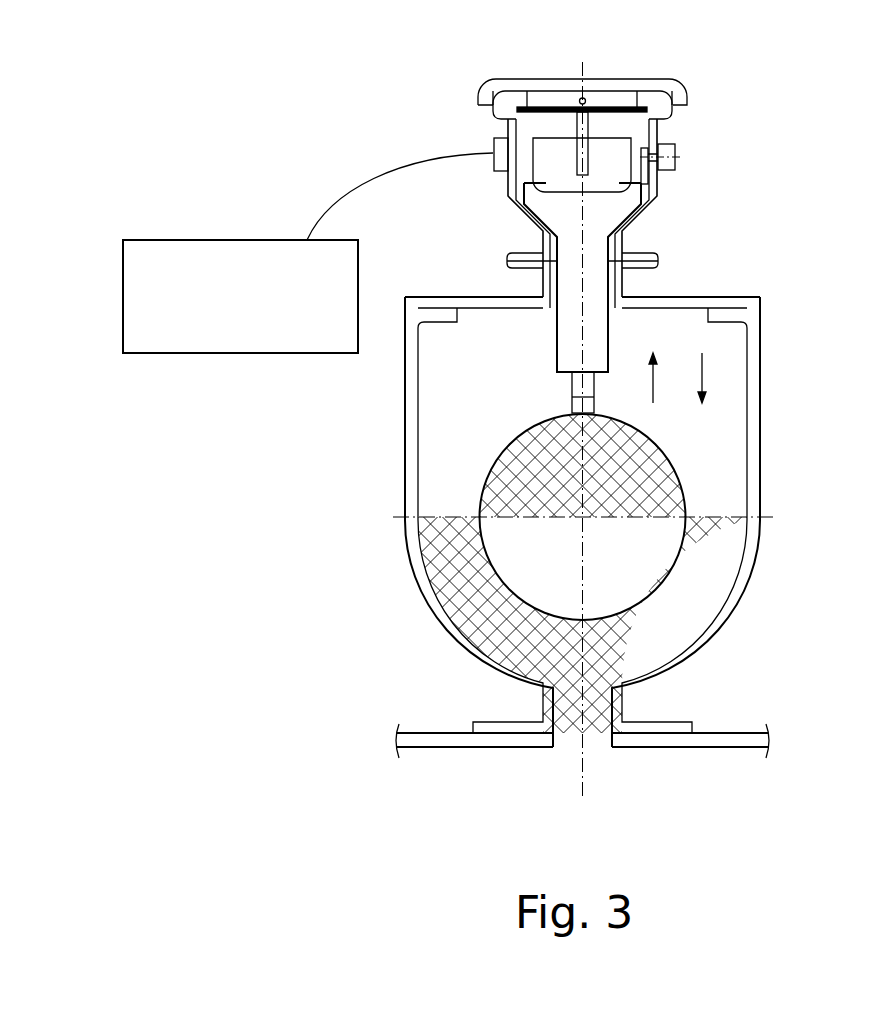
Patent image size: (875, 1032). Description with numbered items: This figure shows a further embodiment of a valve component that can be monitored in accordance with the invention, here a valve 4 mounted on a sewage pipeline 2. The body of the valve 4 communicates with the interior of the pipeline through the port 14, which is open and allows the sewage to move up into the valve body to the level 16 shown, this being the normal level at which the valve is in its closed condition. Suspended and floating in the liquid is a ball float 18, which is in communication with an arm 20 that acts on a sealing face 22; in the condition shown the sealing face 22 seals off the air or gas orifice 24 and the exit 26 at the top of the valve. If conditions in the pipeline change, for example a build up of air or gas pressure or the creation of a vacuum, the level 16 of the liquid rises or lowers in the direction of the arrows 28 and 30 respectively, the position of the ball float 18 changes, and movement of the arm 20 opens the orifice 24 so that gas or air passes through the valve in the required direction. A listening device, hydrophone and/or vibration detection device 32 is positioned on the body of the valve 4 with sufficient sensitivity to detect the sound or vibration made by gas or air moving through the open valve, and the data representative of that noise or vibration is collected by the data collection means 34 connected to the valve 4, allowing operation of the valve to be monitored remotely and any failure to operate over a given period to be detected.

The pipe 2 is at (428, 742).
The valve 4 is at (750, 403).
The port 14 is at (593, 710).
The level 16 is at (726, 517).
The ball float 18 is at (508, 477).
The arm 20 is at (578, 390).
The sealing face 22 is at (525, 183).
The orifice 24 is at (590, 93).
The exit 26 is at (682, 96).
The arrow 28 is at (671, 378).
The arrow 30 is at (720, 378).
The vibration detection device 32 is at (494, 141).
The collection means 34 is at (233, 343).